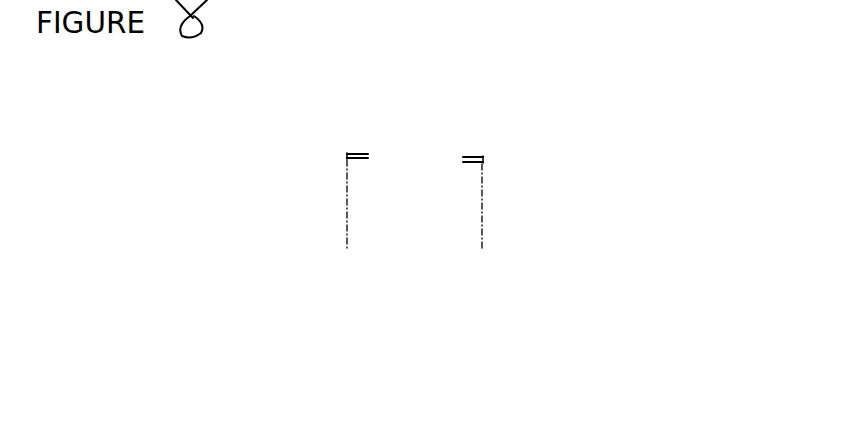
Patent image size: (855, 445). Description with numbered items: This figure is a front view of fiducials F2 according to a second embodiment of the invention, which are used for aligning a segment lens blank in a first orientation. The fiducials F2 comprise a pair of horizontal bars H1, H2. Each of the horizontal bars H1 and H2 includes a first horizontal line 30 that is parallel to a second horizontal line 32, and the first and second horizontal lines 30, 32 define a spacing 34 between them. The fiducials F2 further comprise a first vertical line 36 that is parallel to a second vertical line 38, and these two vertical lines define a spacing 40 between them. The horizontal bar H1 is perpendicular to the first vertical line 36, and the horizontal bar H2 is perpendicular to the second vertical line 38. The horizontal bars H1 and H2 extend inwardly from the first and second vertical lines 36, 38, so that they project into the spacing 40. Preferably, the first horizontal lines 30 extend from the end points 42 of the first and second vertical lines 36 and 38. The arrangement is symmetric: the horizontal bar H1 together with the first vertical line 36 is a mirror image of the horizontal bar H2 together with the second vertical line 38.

The first horizontal line 30 is at (366, 153).
The second horizontal line 32 is at (357, 163).
The spacing 34 is at (453, 162).
The first vertical line 36 is at (346, 268).
The second vertical line 38 is at (493, 259).
The spacing 40 is at (416, 279).
The end points 42 is at (340, 146).
The horizontal bar H1 is at (360, 132).
The horizontal bar H2 is at (487, 141).
The fiducials F2 is at (611, 63).